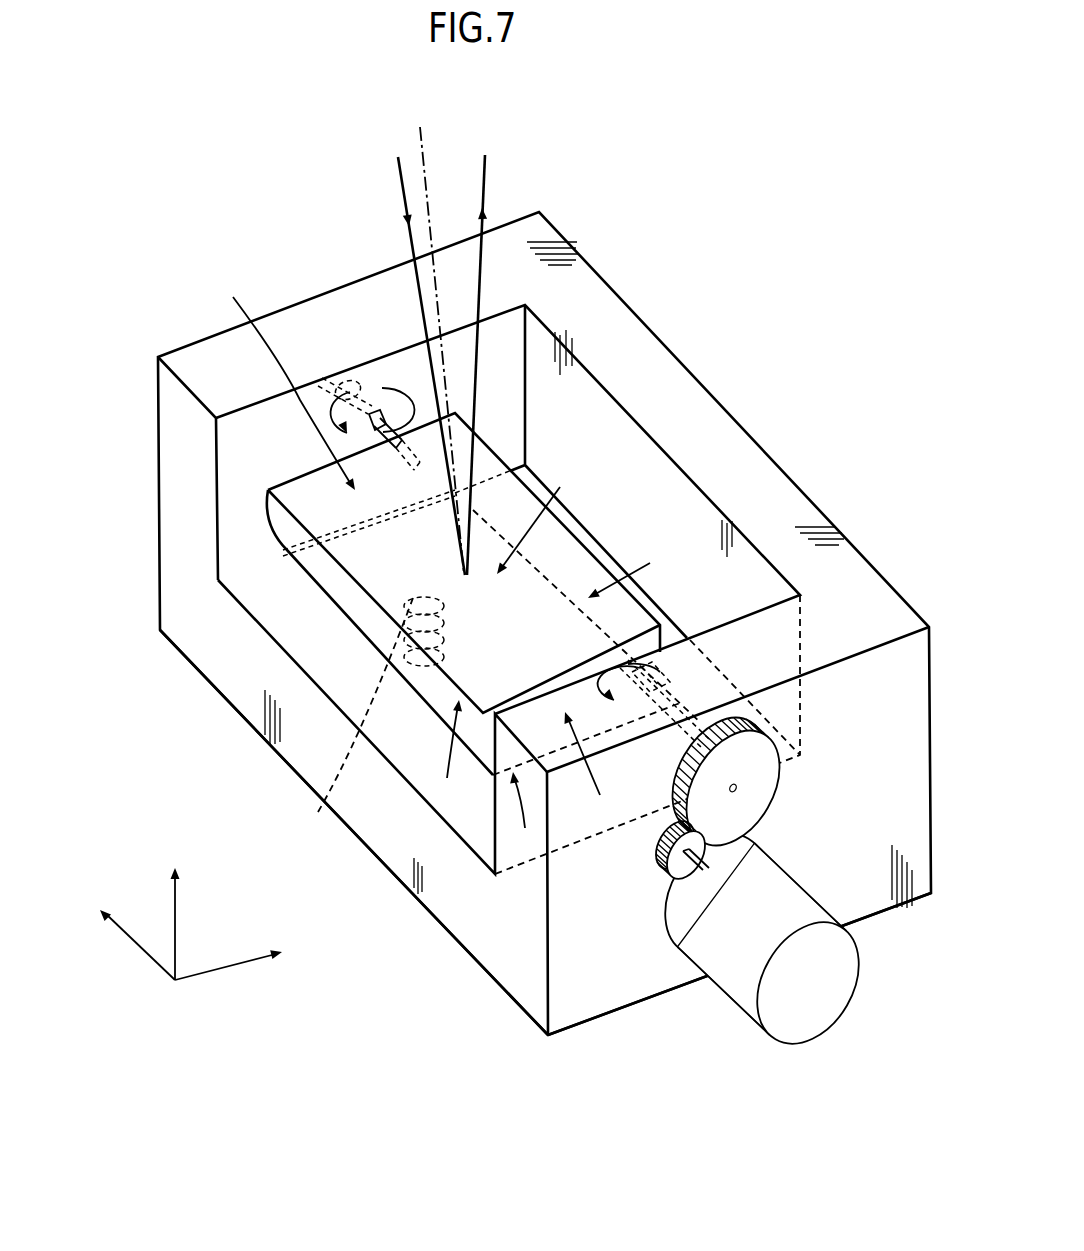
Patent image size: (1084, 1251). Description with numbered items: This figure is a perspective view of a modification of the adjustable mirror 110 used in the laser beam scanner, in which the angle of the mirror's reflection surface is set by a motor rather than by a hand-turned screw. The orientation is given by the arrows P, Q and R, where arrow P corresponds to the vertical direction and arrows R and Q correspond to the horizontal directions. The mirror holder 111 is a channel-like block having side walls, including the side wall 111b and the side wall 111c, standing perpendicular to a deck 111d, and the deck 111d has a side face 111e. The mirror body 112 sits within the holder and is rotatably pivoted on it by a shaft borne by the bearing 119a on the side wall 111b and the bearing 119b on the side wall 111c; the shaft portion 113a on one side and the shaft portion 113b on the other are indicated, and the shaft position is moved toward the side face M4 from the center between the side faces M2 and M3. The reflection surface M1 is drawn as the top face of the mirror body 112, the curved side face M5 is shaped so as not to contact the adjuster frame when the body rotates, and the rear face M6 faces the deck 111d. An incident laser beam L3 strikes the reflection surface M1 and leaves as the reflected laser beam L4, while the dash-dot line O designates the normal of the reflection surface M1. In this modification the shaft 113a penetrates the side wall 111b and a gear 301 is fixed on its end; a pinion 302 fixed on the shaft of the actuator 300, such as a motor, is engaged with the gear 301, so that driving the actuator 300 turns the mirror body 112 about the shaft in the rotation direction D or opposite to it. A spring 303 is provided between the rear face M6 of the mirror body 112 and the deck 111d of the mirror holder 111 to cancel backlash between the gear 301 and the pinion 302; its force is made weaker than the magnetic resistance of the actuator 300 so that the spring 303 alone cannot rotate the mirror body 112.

The adjustable mirror 110 is at (636, 286).
The mirror holder 111 is at (665, 378).
The side wall 111b is at (593, 985).
The side wall 111c is at (236, 462).
The deck 111d is at (258, 592).
The side face of the deck 111e is at (505, 946).
The mirror body 112 is at (370, 572).
The shaft 113a is at (690, 652).
The shaft 113b is at (412, 378).
The bearing 119a is at (700, 689).
The bearing 119b is at (313, 385).
The actuator 300 is at (782, 893).
The gear 301 is at (757, 788).
The pinion 302 is at (672, 873).
The spring 303 is at (320, 812).
The incident laser beam L3 is at (398, 168).
The reflected laser beam L4 is at (485, 170).
The normal of the reflection surface O is at (437, 332).
The rotation direction D is at (382, 388).
The reflection surface M1 is at (548, 516).
The side face M2 is at (591, 765).
The side face M3 is at (289, 377).
The side face M4 is at (631, 565).
The side face M5 is at (443, 751).
The rear face M6 is at (523, 812).
The arrow P is at (131, 951).
The arrow Q is at (242, 953).
The arrow R is at (173, 909).